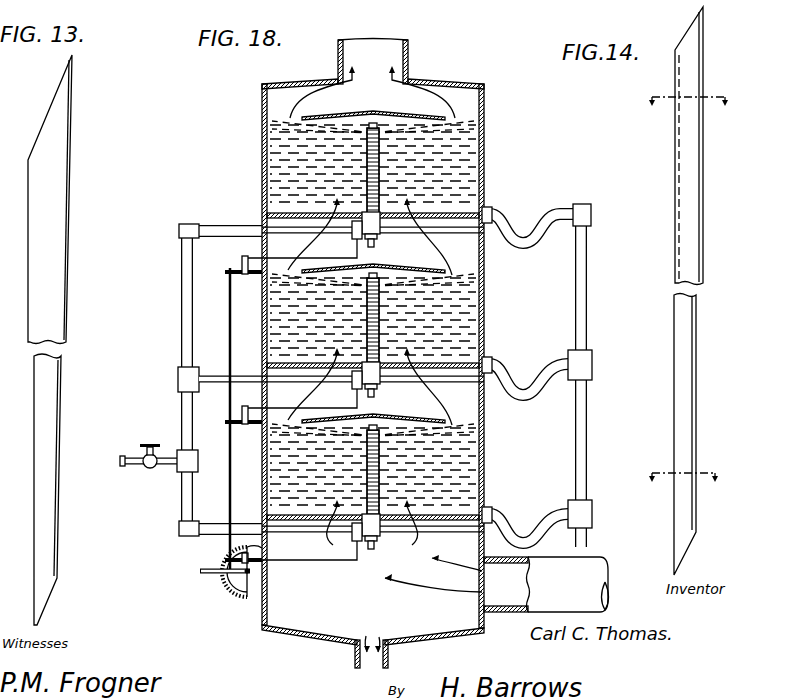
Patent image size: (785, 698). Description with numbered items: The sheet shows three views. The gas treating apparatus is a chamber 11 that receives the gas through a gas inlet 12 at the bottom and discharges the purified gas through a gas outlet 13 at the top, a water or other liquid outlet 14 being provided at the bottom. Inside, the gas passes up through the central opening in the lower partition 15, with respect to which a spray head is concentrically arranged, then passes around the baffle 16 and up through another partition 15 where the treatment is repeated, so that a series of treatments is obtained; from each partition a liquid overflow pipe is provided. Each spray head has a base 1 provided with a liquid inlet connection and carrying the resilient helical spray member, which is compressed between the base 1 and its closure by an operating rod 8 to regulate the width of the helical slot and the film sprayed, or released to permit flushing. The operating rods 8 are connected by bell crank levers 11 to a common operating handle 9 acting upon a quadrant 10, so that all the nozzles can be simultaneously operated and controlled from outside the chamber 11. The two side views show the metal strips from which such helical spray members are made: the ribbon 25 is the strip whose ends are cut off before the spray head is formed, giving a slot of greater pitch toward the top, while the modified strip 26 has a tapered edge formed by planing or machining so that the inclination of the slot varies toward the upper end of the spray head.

In FIG. 18, the base 1 is at (358, 374).
In FIG. 18, the operating rod 8 is at (272, 231).
In FIG. 18, the operating handle 9 is at (212, 574).
In FIG. 18, the quadrant 10 is at (240, 588).
In FIG. 18, the chamber 11 is at (484, 112).
In FIG. 18, the gas inlet 12 is at (592, 566).
In FIG. 18, the gas outlet 13 is at (409, 55).
In FIG. 18, the liquid outlet 14 is at (357, 660).
In FIG. 18, the partition 15 is at (444, 218).
In FIG. 14, the partition 15 is at (683, 485).
In FIG. 18, the baffle 16 is at (338, 116).
In FIG. 14, the baffle 16 is at (685, 110).
In FIG. 13, the plate 25 is at (70, 340).
In FIG. 14, the plate 26 is at (686, 216).